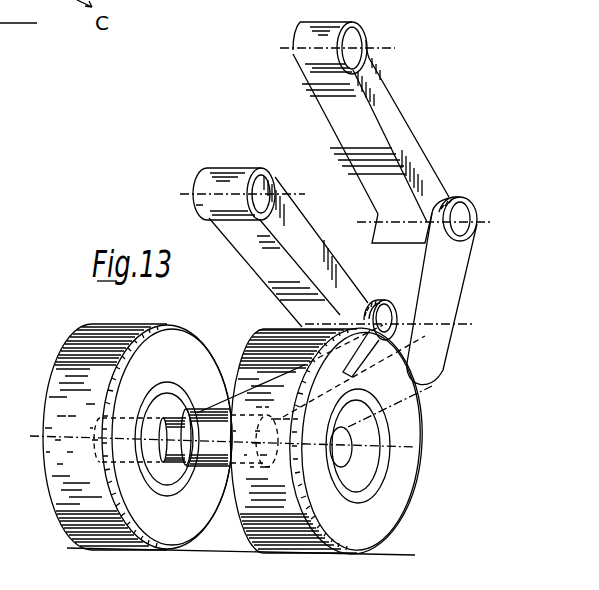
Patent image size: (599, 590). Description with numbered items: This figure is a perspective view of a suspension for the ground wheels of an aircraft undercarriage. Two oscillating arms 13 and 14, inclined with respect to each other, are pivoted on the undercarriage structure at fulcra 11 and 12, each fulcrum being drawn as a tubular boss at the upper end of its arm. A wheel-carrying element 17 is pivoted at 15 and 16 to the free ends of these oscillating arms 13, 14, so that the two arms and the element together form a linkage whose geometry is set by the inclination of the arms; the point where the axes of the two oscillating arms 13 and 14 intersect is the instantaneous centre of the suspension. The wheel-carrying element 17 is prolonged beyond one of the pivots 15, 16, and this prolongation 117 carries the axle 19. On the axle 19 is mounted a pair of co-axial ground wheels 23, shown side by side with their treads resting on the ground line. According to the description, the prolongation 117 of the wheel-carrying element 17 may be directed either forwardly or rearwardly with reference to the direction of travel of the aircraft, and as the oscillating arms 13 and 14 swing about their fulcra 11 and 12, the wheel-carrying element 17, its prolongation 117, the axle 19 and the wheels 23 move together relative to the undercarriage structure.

The fulcrum 11 is at (356, 46).
The fulcrum 12 is at (262, 186).
The oscillating arm 13 is at (392, 99).
The oscillating arm 14 is at (313, 228).
The pivot 15 is at (461, 214).
The pivot 16 is at (389, 305).
The wheel-carrying element 17 is at (450, 286).
The prolongation 117 is at (395, 404).
The axle 19 is at (351, 452).
The ground wheels 23 is at (58, 504).